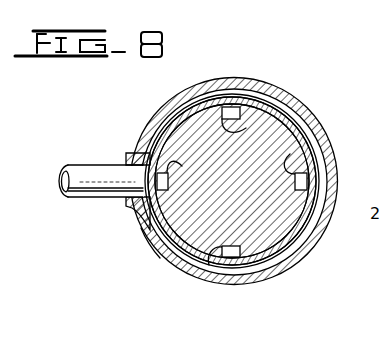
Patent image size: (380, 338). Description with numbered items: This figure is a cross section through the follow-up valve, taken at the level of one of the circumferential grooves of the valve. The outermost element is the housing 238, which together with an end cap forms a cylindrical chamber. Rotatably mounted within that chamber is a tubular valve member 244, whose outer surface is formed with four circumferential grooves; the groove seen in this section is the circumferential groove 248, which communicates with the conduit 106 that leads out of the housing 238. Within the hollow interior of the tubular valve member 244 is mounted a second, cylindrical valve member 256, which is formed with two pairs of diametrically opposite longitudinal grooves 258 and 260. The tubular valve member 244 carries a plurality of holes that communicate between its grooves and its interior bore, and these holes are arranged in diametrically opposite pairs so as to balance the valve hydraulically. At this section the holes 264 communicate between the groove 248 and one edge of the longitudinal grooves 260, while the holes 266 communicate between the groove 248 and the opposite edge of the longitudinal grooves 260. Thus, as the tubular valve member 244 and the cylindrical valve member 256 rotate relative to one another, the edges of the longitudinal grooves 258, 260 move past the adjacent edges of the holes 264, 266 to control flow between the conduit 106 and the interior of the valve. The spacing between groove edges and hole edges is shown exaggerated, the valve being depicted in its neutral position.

The conduit 106 is at (97, 184).
The housing 238 is at (278, 93).
The tubular valve member 244 is at (170, 131).
The circumferential groove 248 is at (157, 236).
The second cylindrical valve member 256 is at (188, 153).
The longitudinal grooves 258 is at (140, 152).
The longitudinal grooves 260 is at (241, 114).
The holes 264 is at (203, 103).
The holes 266 is at (257, 107).